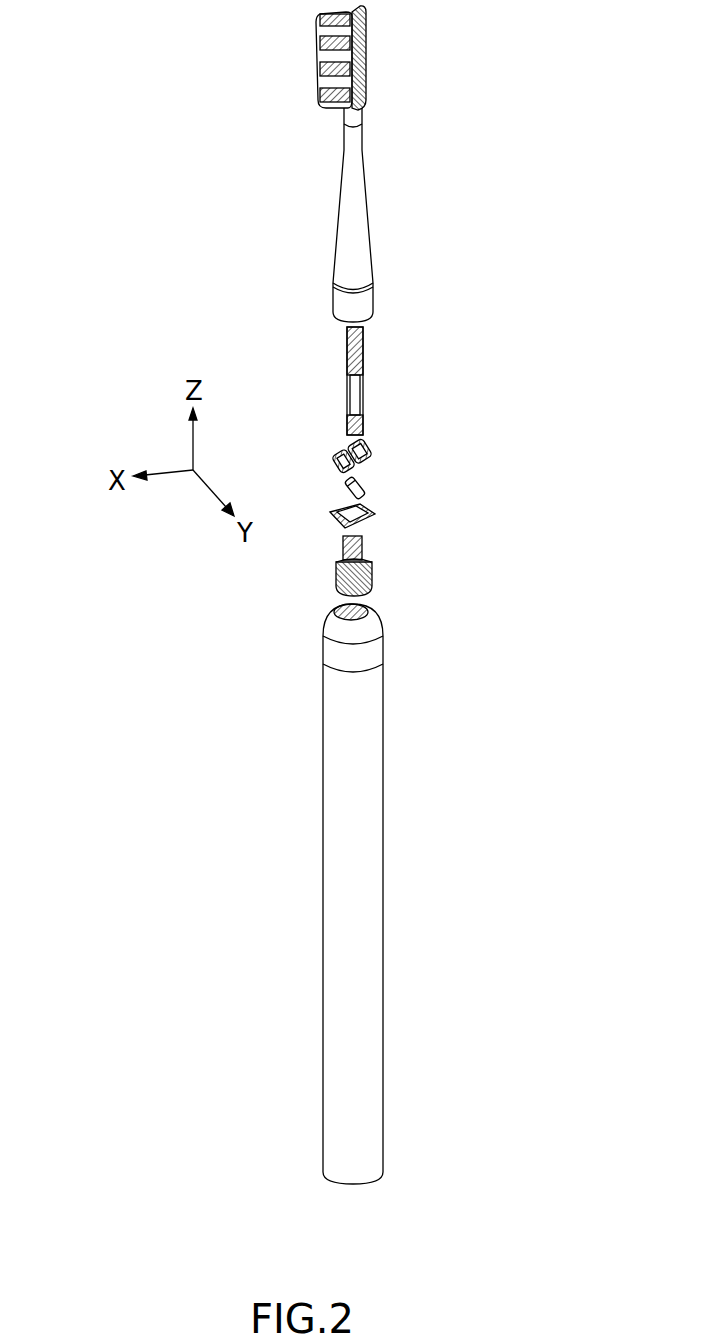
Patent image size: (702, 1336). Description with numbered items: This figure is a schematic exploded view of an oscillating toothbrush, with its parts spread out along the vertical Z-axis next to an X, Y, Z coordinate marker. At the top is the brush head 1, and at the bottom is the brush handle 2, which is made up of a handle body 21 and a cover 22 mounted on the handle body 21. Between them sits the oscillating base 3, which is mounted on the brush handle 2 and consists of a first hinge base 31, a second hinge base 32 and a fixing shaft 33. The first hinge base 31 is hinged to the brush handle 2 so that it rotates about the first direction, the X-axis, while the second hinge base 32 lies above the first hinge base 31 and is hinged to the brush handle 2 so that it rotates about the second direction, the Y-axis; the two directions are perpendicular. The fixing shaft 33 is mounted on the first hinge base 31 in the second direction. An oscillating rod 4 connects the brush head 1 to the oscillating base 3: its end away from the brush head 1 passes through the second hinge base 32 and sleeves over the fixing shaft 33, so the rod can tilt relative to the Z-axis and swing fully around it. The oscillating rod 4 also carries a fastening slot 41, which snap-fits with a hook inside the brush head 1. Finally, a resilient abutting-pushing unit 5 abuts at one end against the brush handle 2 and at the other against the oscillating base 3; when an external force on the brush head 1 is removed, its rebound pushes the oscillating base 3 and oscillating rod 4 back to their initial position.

The brush head 1 is at (350, 221).
The brush handle 2 is at (419, 894).
The handle body 21 is at (372, 690).
The cover 22 is at (372, 652).
The oscillating base 3 is at (412, 479).
The first hinge base 31 is at (400, 513).
The second hinge base 32 is at (375, 450).
The fixing shaft 33 is at (366, 490).
The oscillating rod 4 is at (414, 376).
The fastening slot 41 is at (362, 386).
The resilient abutting-pushing unit 5 is at (410, 572).